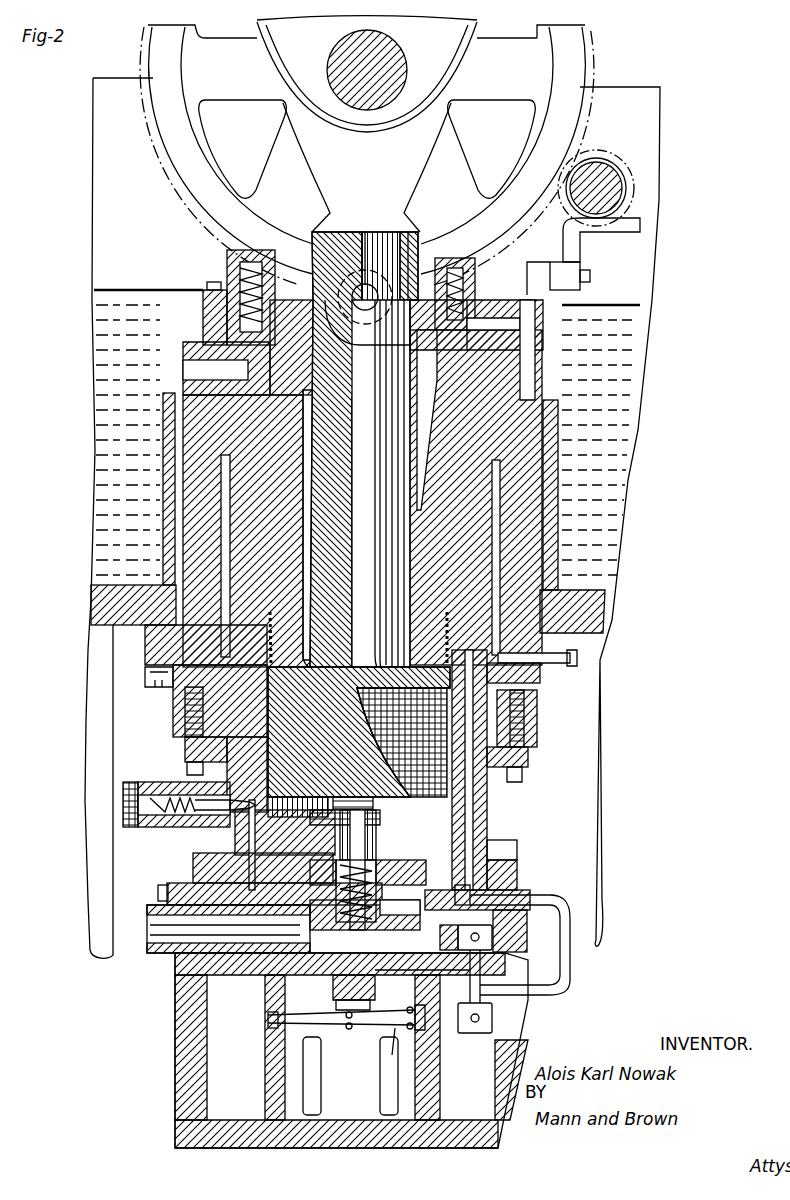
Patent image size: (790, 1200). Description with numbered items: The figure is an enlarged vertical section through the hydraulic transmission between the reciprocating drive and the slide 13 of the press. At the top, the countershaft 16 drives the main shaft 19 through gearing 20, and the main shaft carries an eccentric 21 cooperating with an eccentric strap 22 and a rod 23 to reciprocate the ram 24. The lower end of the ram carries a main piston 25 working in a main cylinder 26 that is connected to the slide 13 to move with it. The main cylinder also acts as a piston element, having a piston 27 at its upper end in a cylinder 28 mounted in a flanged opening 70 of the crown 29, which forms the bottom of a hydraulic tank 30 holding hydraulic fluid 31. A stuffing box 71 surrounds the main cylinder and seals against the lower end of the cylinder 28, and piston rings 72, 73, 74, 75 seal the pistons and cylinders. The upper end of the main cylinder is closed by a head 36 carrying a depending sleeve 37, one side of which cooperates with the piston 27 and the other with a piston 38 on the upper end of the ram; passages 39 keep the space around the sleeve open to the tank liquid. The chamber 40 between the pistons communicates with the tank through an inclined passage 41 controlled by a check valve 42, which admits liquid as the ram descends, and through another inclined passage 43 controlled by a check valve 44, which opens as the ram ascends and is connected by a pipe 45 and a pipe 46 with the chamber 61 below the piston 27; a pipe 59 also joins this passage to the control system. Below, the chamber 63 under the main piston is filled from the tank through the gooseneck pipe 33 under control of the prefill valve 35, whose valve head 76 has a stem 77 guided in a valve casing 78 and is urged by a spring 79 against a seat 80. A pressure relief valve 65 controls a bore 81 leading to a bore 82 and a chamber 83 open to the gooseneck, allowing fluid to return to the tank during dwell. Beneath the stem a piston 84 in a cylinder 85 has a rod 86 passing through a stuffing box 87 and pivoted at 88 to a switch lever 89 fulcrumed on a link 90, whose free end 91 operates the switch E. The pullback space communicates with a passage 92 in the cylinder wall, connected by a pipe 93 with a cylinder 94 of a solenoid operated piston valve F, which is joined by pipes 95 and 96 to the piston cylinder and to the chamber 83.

The slide 13 is at (180, 1075).
The countershaft 16 is at (613, 192).
The main shaft 19 is at (330, 52).
The gearing 20 is at (605, 165).
The eccentric 21 is at (293, 70).
The eccentric strap 22 is at (463, 75).
The rod 23 is at (393, 172).
The ram 24 is at (357, 460).
The main piston 25 is at (378, 705).
The main cylinder 26 is at (480, 805).
The piston 27 is at (540, 440).
The cylinder 28 is at (535, 492).
The crown 29 is at (94, 604).
The hydraulic tank 30 is at (93, 235).
The hydraulic fluid 31 is at (97, 334).
The gooseneck pipe 33 is at (160, 940).
The prefill valve 35 is at (335, 825).
The head 36 is at (228, 290).
The sleeve 37 is at (392, 520).
The piston 38 is at (405, 262).
The passages 39 is at (226, 368).
The chamber 40 is at (398, 553).
The passage 41 is at (315, 390).
The check valve 42 is at (200, 300).
The passage 43 is at (430, 388).
The check valve 44 is at (498, 268).
The pipe or passage 45 is at (510, 300).
The pipe or passage 46 is at (540, 340).
The pipe 59 is at (552, 268).
The chamber 61 is at (497, 567).
The chamber 63 is at (305, 800).
The pressure relief valve 65 is at (180, 826).
The flanged opening 70 is at (170, 530).
The stuffing box 71 is at (538, 718).
The piston ring 72 is at (290, 722).
The piston ring 73 is at (445, 612).
The piston ring 74 is at (220, 424).
The piston ring 75 is at (367, 322).
The valve head 76 is at (353, 794).
The stem 77 is at (353, 870).
The valve casing 78 is at (368, 888).
The spring 79 is at (347, 891).
The seat 80 is at (384, 789).
The bore 81 is at (285, 845).
The bore 82 is at (270, 877).
The chamber 83 is at (283, 926).
The piston 84 is at (401, 976).
The cylinder 85 is at (333, 975).
The rod 86 is at (372, 980).
The stuffing box 87 is at (335, 1000).
The pivot 88 is at (352, 1030).
The switch lever 89 is at (340, 1025).
The link 90 is at (268, 1022).
The free end 91 is at (407, 1046).
The passage 92 is at (470, 780).
The pipe 93 is at (562, 960).
The cylinder 94 is at (485, 962).
The pipe 95 is at (465, 937).
The pipe 96 is at (428, 965).
The switch E is at (422, 1010).
The solenoid operated piston valve F is at (495, 1012).